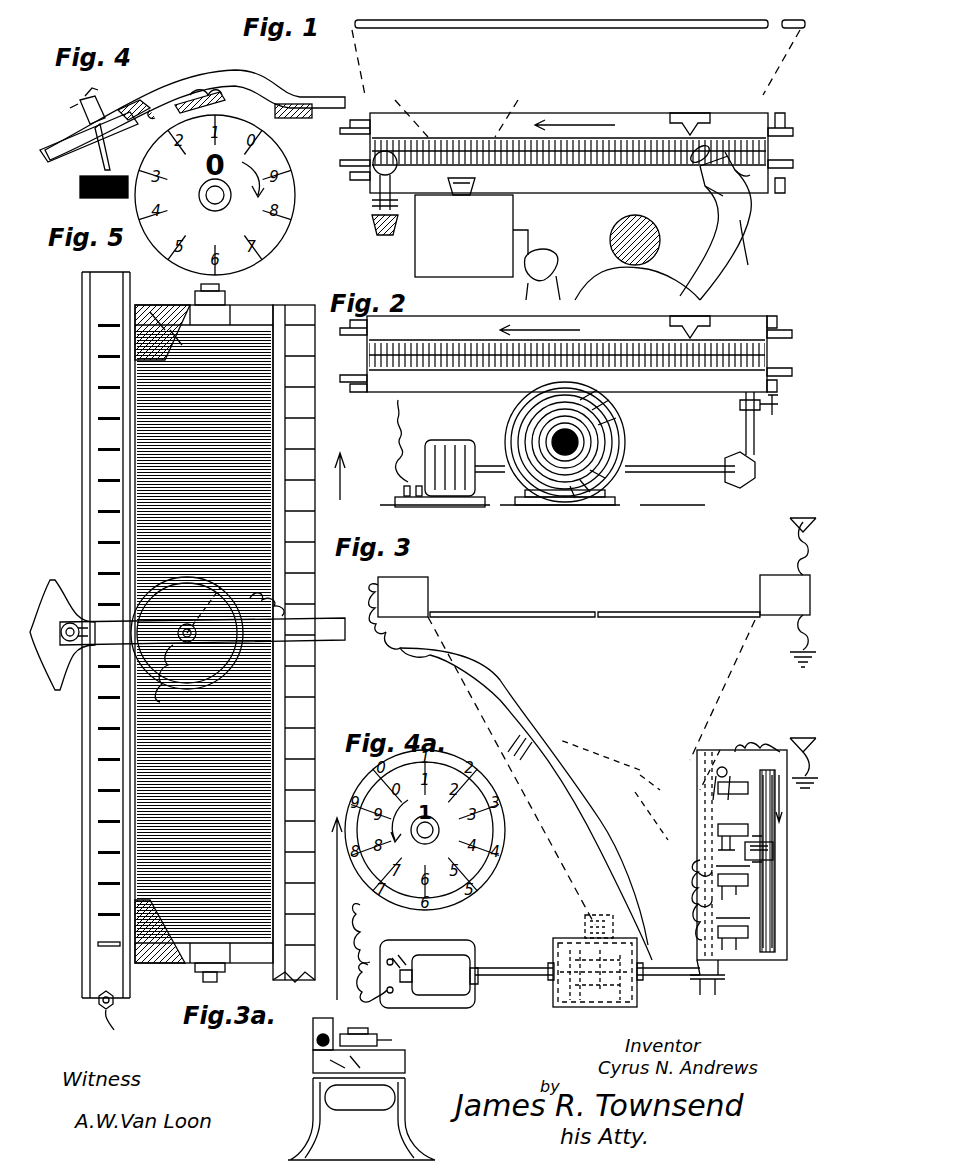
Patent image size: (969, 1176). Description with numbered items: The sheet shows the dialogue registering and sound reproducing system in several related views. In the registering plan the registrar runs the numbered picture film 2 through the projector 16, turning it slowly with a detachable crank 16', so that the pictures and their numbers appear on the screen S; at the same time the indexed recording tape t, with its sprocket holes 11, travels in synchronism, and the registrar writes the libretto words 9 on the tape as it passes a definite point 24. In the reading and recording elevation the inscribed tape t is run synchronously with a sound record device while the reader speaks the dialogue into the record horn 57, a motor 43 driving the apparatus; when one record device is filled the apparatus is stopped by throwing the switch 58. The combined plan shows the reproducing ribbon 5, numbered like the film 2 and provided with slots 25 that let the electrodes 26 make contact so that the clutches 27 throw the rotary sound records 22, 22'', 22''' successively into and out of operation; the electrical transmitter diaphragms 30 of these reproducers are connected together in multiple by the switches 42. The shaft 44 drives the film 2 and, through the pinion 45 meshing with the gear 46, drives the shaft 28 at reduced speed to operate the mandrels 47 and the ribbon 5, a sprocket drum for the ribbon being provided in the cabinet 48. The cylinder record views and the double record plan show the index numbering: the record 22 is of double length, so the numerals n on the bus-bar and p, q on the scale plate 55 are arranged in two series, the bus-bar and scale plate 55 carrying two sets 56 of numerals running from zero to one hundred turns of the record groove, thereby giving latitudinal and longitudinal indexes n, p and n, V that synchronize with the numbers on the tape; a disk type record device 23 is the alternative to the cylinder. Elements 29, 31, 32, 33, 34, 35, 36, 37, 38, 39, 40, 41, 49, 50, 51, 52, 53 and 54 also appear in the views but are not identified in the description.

In FIG. 1, the screen S is at (593, 30).
In FIG. 1, the sprocket holes 11 is at (398, 150).
In FIG. 1, the projector 16 is at (444, 236).
In FIG. 3, the projector 16 is at (595, 984).
In FIG. 1, the detachable crank 16' is at (540, 233).
In FIG. 1, the definite point 24 is at (688, 112).
In FIG. 2, the definite point 24 is at (706, 316).
In FIG. 1, the recording tape t is at (611, 164).
In FIG. 2, the recording tape t is at (690, 372).
In FIG. 2, the slots 25 is at (425, 352).
In FIG. 3, the slots 25 is at (777, 820).
In FIG. 2, the motor 43 is at (448, 440).
In FIG. 3, the motor 43 is at (440, 952).
In FIG. 2, the record horn 57 is at (621, 436).
In FIG. 2, the switch 58 is at (402, 484).
In FIG. 3, the switch 58 is at (395, 955).
In FIG. 2, the libretto words 9 is at (703, 372).
In FIG. 5, the sets of numerals 56 is at (313, 430).
In FIG. 5, the scale plate 55 is at (312, 740).
In FIG. 3, the terminal box 35 is at (430, 596).
In FIG. 3, the terminal box 36 is at (758, 592).
In FIG. 3, the rod 29 is at (645, 618).
In FIG. 3, the antenna 37 is at (796, 530).
In FIG. 3, the ground 38 is at (796, 650).
In FIG. 3, the antenna 40 is at (800, 736).
In FIG. 3, the ground 41 is at (813, 764).
In FIG. 3, the electrical transmitter diaphragms 30 is at (742, 854).
In FIG. 4, the electrical transmitter diaphragms 30 is at (142, 124).
In FIG. 5, the electrical transmitter diaphragms 30 is at (187, 633).
In FIG. 3, the conductor 32 is at (445, 690).
In FIG. 3, the arm 31 is at (577, 750).
In FIG. 4, the arm 31 is at (215, 90).
In FIG. 3, the contacts 33 is at (524, 758).
In FIG. 3, the conductor 34 is at (582, 800).
In FIG. 3, the clutches 27 is at (700, 775).
In FIG. 3, the rotary sound record 22 is at (713, 805).
In FIG. 4a, the rotary sound record 22 is at (425, 824).
In FIG. 4, the rotary sound record 22 is at (225, 195).
In FIG. 5, the rotary sound record 22 is at (204, 649).
In FIG. 3, the rotary sound record 22'' is at (692, 897).
In FIG. 3, the rotary sound record 22''' is at (773, 934).
In FIG. 3a, the rotary sound record 22''' is at (374, 1031).
In FIG. 3, the switches 42 is at (738, 821).
In FIG. 3, the electrodes 26 is at (775, 850).
In FIG. 3, the mandrels 47 is at (760, 880).
In FIG. 3, the reproducing ribbon 5 is at (778, 910).
In FIG. 3, the shaft 28 is at (635, 858).
In FIG. 3, the film 2 is at (585, 922).
In FIG. 3, the shaft 44 is at (515, 976).
In FIG. 3, the support 39 is at (749, 975).
In FIG. 3a, the support 39 is at (426, 1059).
In FIG. 3, the pinion 45 is at (690, 975).
In FIG. 3, the gear 46 is at (700, 980).
In FIG. 3a, the cabinet 48 is at (313, 1030).
In FIG. 3a, the stand 49 is at (313, 1064).
In FIG. 4a, the disk type record device 23 is at (505, 840).
In FIG. 4a, the scale plate numerals q is at (498, 868).
In FIG. 5, the scale plate numerals q is at (280, 310).
In FIG. 4a, the longitudinal index V is at (334, 777).
In FIG. 5, the longitudinal index V is at (332, 777).
In FIG. 4, the scale plate numerals p is at (283, 212).
In FIG. 5, the scale plate numerals p is at (200, 965).
In FIG. 5, the bus-bar numerals n is at (92, 806).
In FIG. 5, the wire 50 is at (108, 1022).
In FIG. 5, the scale column 51 is at (98, 955).
In FIG. 4, the block 52 is at (80, 178).
In FIG. 5, the block 52 is at (98, 943).
In FIG. 4, the lever 53 is at (97, 162).
In FIG. 5, the lever 53 is at (118, 634).
In FIG. 5, the handle 54 is at (150, 672).